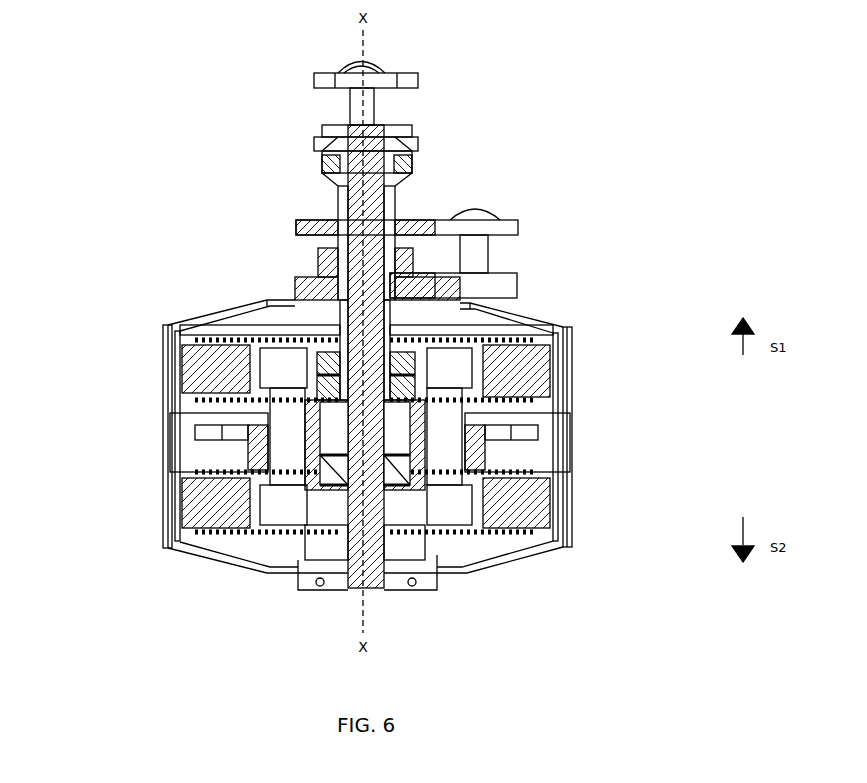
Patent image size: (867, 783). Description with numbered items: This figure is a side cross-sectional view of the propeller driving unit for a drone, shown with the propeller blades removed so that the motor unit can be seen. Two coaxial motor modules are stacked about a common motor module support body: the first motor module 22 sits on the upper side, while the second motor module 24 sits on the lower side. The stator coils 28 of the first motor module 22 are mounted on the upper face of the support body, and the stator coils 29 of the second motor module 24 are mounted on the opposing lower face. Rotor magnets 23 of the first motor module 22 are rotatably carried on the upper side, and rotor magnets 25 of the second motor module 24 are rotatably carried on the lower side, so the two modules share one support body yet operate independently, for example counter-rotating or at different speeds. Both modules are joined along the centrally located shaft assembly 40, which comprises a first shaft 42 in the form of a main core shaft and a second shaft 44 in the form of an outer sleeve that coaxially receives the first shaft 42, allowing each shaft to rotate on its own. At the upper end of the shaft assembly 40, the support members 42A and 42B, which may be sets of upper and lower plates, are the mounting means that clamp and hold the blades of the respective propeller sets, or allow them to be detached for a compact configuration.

The first motor module 22 is at (172, 383).
The rotor magnets 23 is at (520, 340).
The second motor module 24 is at (172, 520).
The rotor magnets 25 is at (165, 438).
The stator coils 28 is at (453, 370).
The stator coils 29 is at (455, 507).
The shaft assembly 40 is at (377, 213).
The first shaft 42 is at (360, 277).
The support member 42A is at (407, 80).
The support member 42B is at (480, 228).
The second shaft 44 is at (345, 206).